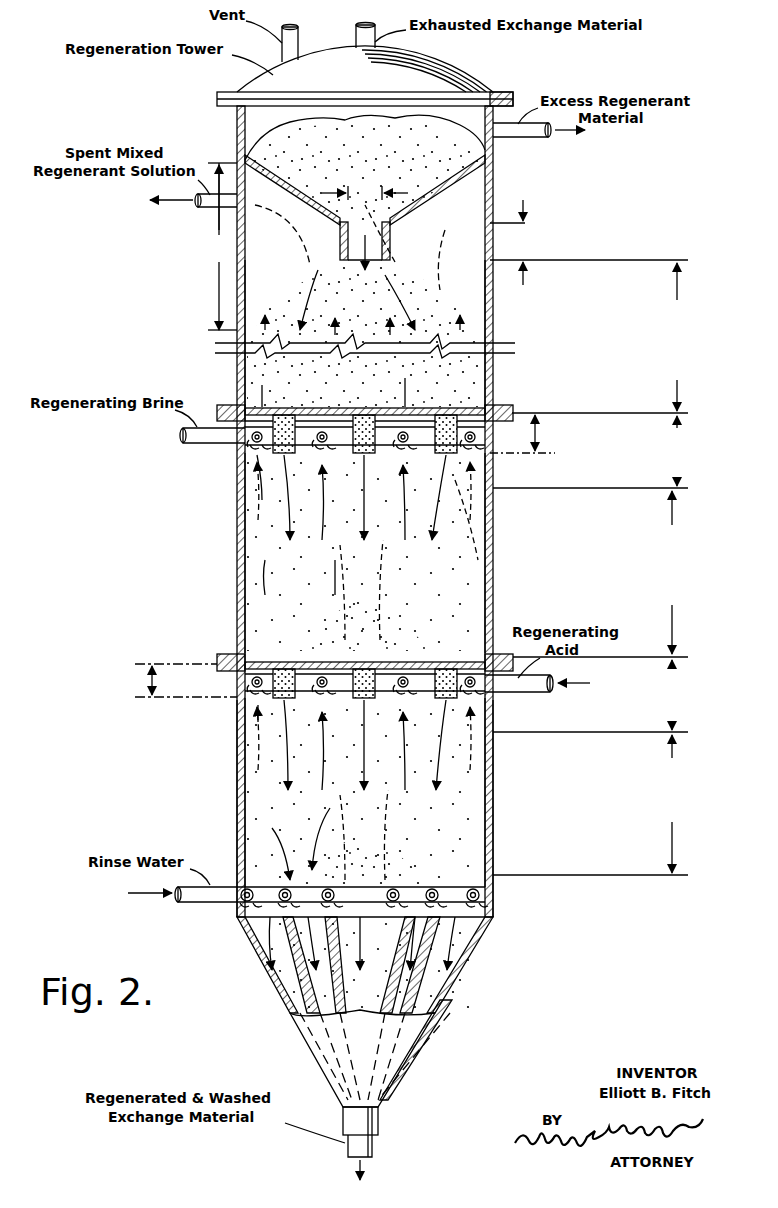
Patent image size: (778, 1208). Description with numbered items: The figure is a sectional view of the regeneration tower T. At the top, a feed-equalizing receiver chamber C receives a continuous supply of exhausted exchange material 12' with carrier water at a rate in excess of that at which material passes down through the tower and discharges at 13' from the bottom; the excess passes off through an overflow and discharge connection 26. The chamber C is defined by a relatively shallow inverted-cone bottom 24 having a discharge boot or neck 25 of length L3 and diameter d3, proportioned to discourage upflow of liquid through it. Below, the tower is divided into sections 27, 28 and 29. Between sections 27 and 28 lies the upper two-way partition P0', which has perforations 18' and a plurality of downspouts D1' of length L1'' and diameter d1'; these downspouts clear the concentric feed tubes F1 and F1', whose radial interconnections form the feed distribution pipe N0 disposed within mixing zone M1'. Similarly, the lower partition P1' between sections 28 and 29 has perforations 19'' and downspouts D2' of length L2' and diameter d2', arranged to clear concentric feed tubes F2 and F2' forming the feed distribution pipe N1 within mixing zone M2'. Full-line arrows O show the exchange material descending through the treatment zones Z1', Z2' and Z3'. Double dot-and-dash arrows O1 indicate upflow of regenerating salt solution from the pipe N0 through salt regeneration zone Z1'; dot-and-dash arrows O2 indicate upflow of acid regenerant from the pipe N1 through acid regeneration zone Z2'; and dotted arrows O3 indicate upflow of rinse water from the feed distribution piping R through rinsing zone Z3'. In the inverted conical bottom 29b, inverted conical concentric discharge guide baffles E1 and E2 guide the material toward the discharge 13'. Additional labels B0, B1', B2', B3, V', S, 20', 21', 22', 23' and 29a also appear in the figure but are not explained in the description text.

The regeneration tower T is at (240, 91).
The feed-equalizing receiver chamber C is at (280, 152).
The top bed of exhausted exchange material B0 is at (364, 172).
The diameter of discharge boot d3 is at (365, 197).
The shallow bottom 24 is at (446, 178).
The discharge boot 25 is at (340, 252).
The vent V' is at (300, 32).
The supply of exhausted exchange material 12' is at (352, 25).
The overflow and discharge connection 26 is at (525, 137).
The spent mixed regenerant solution outlet 23' is at (193, 219).
The solution level height S is at (222, 246).
The length of discharge boot L3 is at (589, 242).
The salt regeneration zone bed B1' is at (365, 333).
The full-line arrows O is at (330, 302).
The upper section of tower 27 is at (493, 322).
The salt regeneration zone Z1' is at (622, 338).
The mixing zone M1' is at (614, 452).
The upper two-way partition P0' is at (376, 398).
The perforations 18' is at (365, 415).
The double dot-and-dash line arrows O1 is at (405, 378).
The regenerating brine inlet 20' is at (317, 450).
The concentric feed tube F1 is at (343, 463).
The length of downspouts L1'' is at (524, 434).
The middle section of tower 28 is at (493, 570).
The diameter of downspouts d1' is at (232, 493).
The downspouts D1' is at (381, 497).
The concentric feed tube F1' is at (364, 501).
The feed distribution pipe N0 is at (383, 577).
The acid regeneration zone bed B2' is at (368, 614).
The dot-and-dash line arrows O2 is at (350, 600).
The lower two-way partition P1' is at (355, 648).
The perforations 19'' is at (365, 664).
The concentric feed tube F2 is at (338, 692).
The regenerating acid inlet 21' is at (537, 700).
The length of downspouts L2' is at (186, 683).
The acid regeneration zone Z2' is at (623, 574).
The mixing zone M2' is at (614, 696).
The rinsing zone Z3' is at (601, 805).
The rinsing zone section 29a is at (238, 805).
The diameter of downspouts d2' is at (225, 732).
The downspouts D2' is at (365, 745).
The concentric feed tube F2' is at (364, 748).
The feed distribution pipe N1 is at (381, 819).
The rinsing zone bed B3 is at (365, 844).
The dotted-line arrows O3 is at (303, 843).
The lower section of tower 29 is at (493, 847).
The feed distribution piping R is at (345, 883).
The rinse water inlet 22' is at (186, 913).
The inverted conical bottom 29b is at (280, 1003).
The discharge guide baffle E1 is at (346, 965).
The discharge guide baffle E2 is at (362, 965).
The discharge 13' is at (387, 1157).